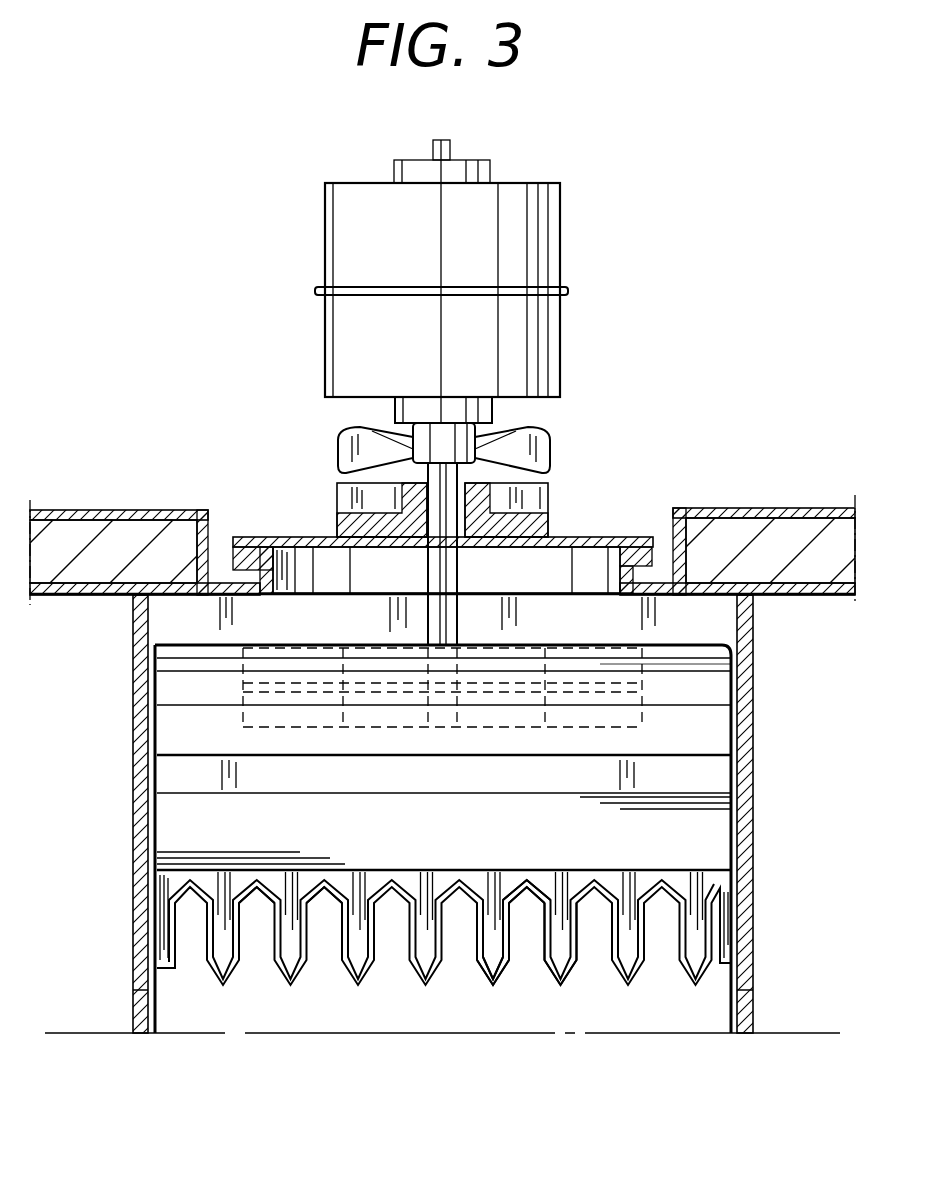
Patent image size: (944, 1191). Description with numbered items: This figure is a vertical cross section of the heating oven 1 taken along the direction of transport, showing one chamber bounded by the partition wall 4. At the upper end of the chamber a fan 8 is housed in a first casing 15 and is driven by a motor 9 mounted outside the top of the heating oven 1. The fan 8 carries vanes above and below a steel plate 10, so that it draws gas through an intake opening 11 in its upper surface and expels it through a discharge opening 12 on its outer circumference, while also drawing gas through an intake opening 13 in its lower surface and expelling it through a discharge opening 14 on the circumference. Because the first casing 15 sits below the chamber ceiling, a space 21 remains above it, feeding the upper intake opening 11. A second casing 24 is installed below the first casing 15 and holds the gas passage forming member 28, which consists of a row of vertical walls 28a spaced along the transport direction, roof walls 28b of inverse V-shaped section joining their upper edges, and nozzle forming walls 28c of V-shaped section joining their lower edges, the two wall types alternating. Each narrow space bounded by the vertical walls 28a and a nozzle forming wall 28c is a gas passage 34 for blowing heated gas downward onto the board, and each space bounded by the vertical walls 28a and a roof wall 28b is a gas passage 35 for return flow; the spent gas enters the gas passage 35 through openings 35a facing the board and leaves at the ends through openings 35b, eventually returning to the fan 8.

The heating oven 1 is at (147, 504).
The partition wall 4 is at (140, 718).
The fan 8 is at (305, 662).
The motor 9 is at (543, 244).
The steel plate 10 is at (483, 686).
The intake opening 11 is at (373, 645).
The discharge opening 12 is at (640, 662).
The intake opening 13 is at (397, 728).
The discharge opening 14 is at (642, 700).
The first casing 15 is at (180, 683).
The space 21 is at (566, 625).
The second casing 24 is at (180, 833).
The gas passage forming member 28 is at (579, 976).
The vertical wall 28a is at (470, 927).
The roof wall 28b is at (510, 900).
The nozzle forming wall 28c is at (492, 955).
The gas passage 34 is at (497, 950).
The gas passage 35 is at (527, 927).
The opening 35a is at (325, 982).
The opening 35b is at (257, 940).